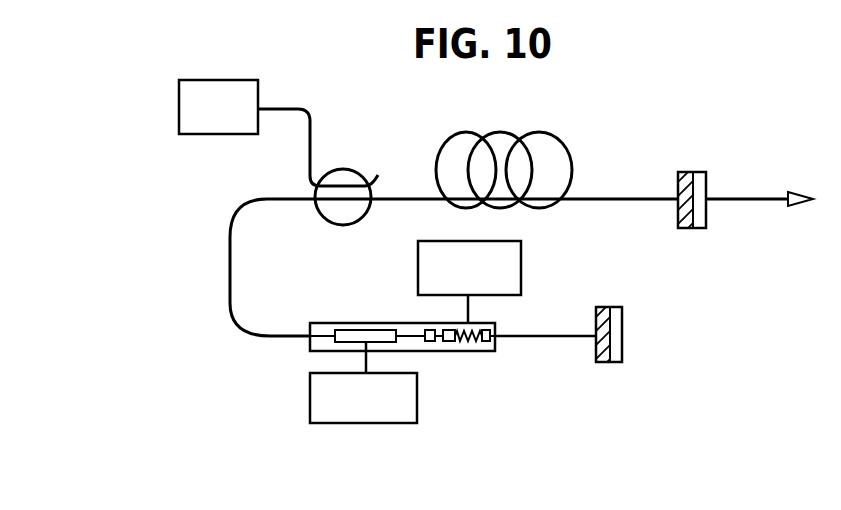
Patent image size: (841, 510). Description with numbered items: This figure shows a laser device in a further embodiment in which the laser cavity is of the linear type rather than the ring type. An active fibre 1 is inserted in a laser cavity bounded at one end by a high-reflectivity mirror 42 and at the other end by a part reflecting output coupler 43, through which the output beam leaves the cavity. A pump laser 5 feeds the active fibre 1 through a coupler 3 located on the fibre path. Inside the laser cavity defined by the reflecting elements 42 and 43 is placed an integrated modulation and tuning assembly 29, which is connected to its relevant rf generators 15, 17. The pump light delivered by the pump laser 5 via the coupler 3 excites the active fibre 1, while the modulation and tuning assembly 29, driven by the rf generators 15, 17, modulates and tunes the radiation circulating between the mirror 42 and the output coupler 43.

The active fibre 1 is at (560, 140).
The coupler 3 is at (350, 168).
The pump laser 5 is at (195, 80).
The rf generator 15 is at (310, 392).
The rf generator 17 is at (521, 262).
The integrated modulation and tuning assembly 29 is at (359, 322).
The high-reflectivity mirror 42 is at (605, 307).
The part reflecting output coupler 43 is at (702, 172).